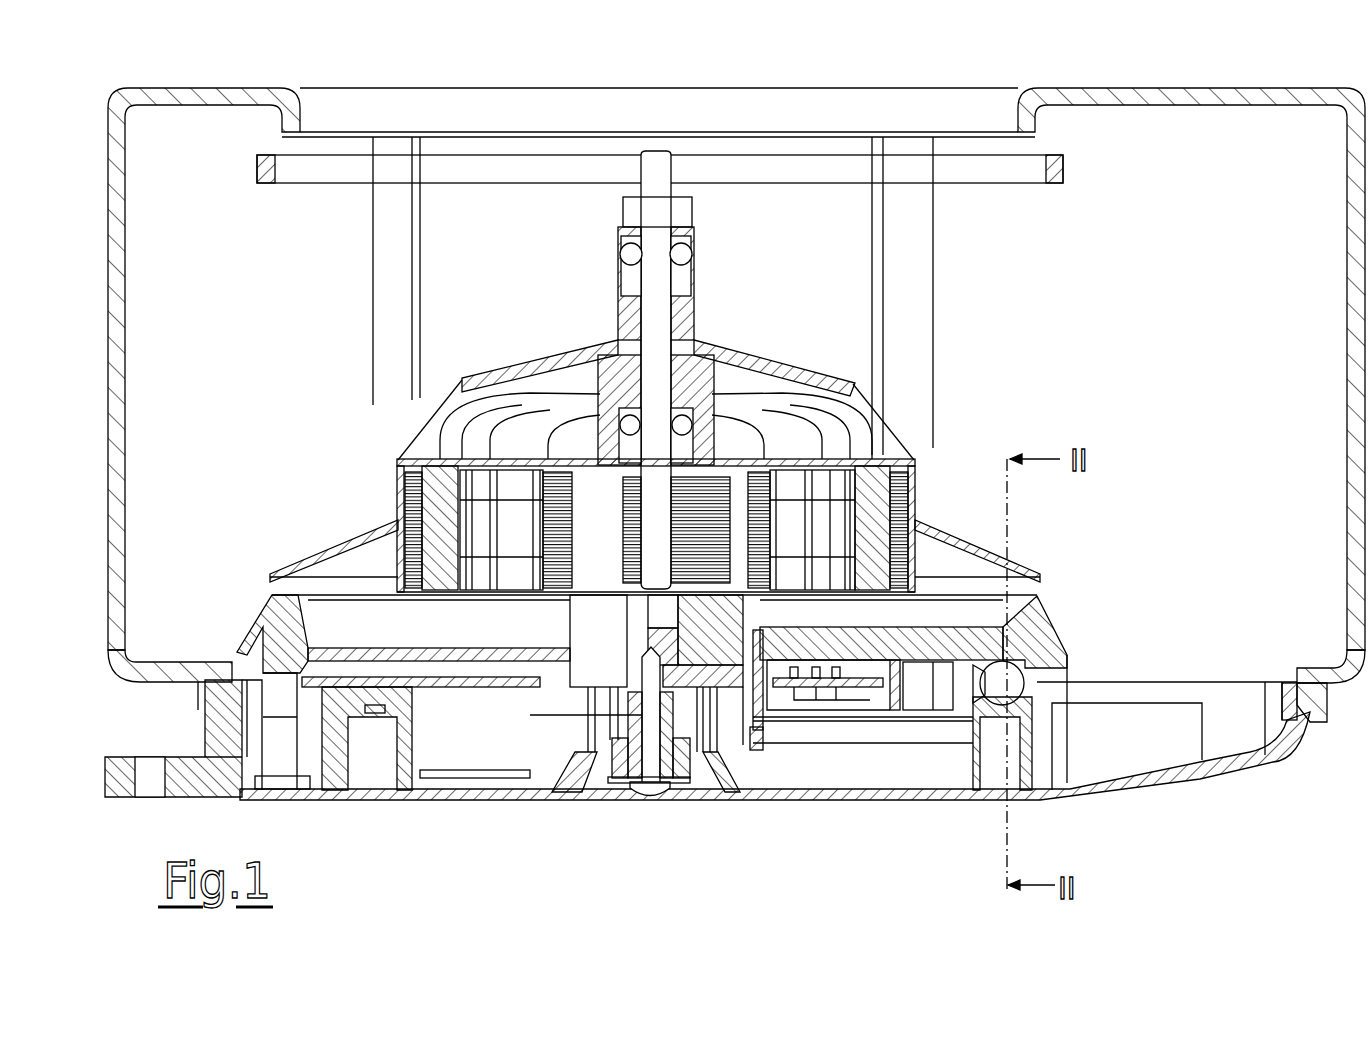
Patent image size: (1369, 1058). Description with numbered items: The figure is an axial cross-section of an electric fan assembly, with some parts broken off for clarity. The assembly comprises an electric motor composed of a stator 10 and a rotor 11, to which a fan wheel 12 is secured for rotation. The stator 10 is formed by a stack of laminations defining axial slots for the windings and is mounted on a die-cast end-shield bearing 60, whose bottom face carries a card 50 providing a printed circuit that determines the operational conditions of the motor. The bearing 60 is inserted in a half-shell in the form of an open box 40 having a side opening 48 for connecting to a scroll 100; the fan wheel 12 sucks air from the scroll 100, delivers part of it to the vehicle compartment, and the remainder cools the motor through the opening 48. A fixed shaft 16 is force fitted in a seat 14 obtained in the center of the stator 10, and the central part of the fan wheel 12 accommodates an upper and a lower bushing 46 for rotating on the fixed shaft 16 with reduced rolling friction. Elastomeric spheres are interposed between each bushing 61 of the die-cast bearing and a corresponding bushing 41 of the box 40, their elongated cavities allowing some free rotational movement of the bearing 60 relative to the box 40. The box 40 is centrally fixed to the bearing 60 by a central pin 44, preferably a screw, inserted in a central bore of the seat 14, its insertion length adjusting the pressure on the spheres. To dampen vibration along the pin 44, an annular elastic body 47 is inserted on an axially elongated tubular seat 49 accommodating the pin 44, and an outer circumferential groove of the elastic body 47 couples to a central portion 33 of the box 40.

The scroll 100 is at (1178, 88).
The fan wheel 12 is at (918, 320).
The fixed shaft 16 is at (657, 325).
The bushings 46 is at (698, 253).
The rotor 11 is at (880, 525).
The stator 10 is at (705, 495).
The die-cast end-shield bearing 60 is at (1040, 617).
The bushing of the die-cast bearing 61 is at (1045, 655).
The side opening 48 is at (1150, 690).
The bushing of box 41 is at (1034, 735).
The half-shell or open box 40 is at (848, 793).
The central portion of box 33 is at (616, 722).
The shaft seat 14 is at (733, 745).
The central pin 44 is at (647, 775).
The axially elongated tubular seat 49 is at (672, 765).
The annular elastic body 47 is at (605, 768).
The card 50 is at (378, 692).